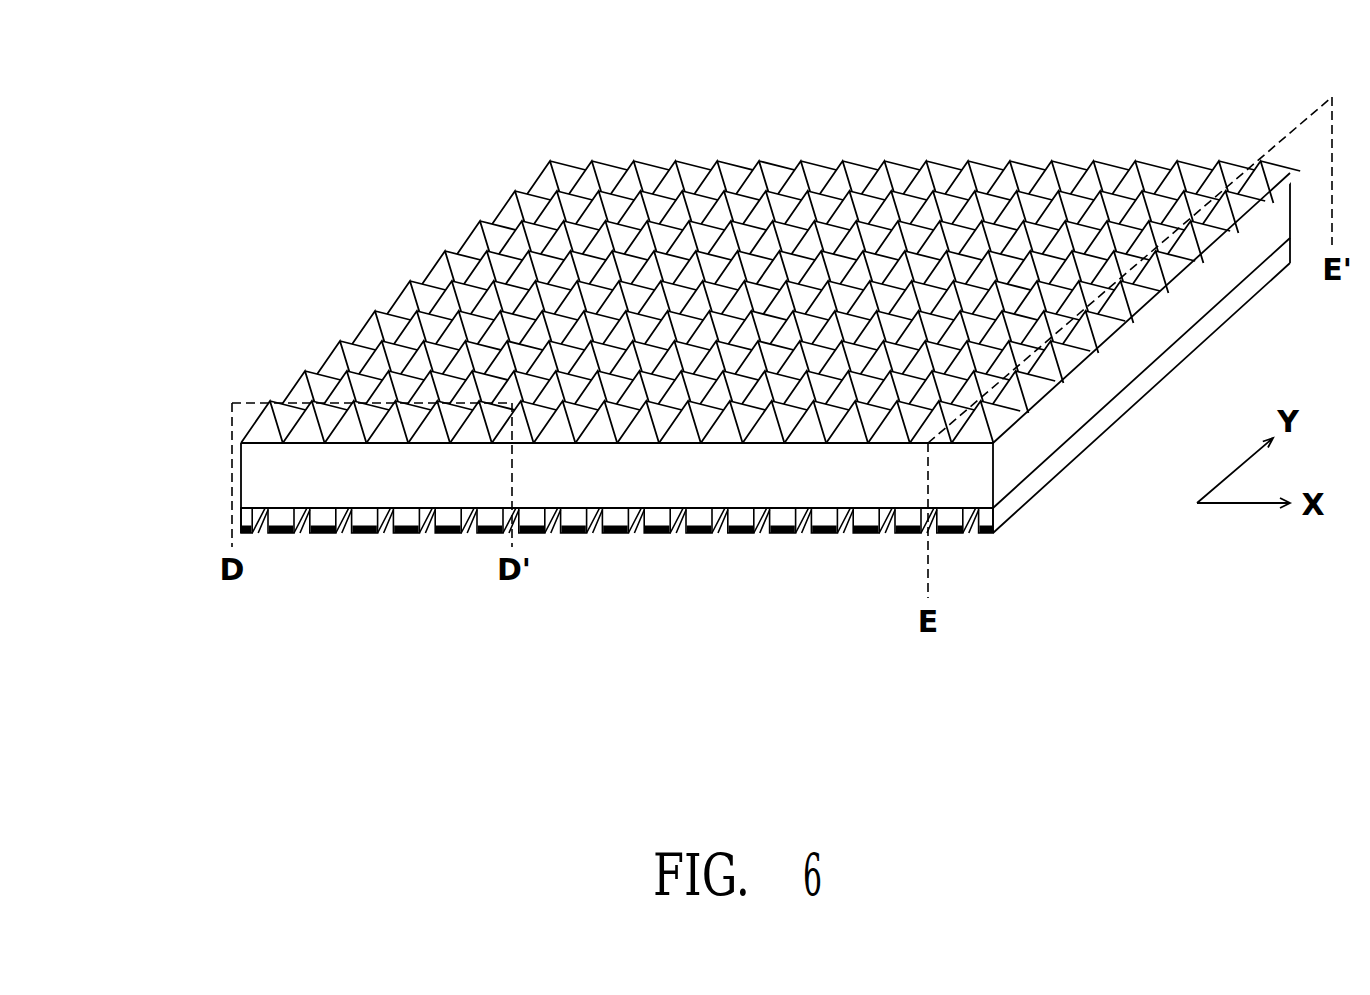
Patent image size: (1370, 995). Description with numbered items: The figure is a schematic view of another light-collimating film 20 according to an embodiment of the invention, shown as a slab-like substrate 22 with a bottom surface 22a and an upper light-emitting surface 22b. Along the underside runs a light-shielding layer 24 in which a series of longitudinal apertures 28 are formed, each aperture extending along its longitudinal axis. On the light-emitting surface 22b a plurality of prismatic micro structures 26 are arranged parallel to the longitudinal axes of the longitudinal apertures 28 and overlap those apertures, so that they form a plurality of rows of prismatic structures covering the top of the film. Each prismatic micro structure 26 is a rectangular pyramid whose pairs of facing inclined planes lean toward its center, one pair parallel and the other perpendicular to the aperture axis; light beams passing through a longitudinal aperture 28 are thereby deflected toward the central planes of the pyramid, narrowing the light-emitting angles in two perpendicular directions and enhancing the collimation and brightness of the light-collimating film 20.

The light-collimating film 20 is at (685, 329).
The substrate 22 is at (685, 344).
The bottom surface 22a is at (963, 506).
The light-emitting surface 22b is at (970, 445).
The light-shielding layer 24 is at (367, 533).
The prismatic micro structure 26 is at (393, 293).
The longitudinal aperture 28 is at (721, 531).